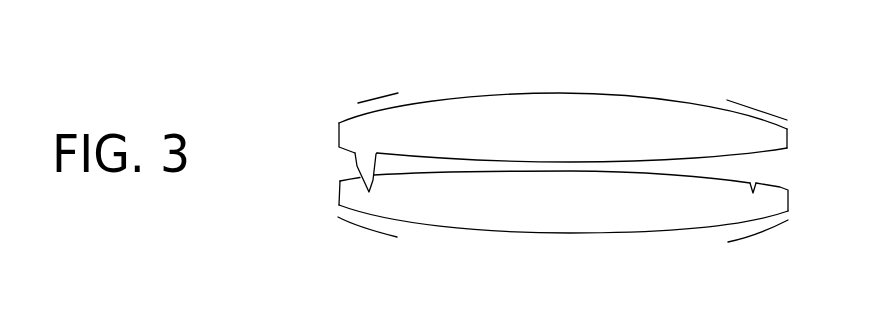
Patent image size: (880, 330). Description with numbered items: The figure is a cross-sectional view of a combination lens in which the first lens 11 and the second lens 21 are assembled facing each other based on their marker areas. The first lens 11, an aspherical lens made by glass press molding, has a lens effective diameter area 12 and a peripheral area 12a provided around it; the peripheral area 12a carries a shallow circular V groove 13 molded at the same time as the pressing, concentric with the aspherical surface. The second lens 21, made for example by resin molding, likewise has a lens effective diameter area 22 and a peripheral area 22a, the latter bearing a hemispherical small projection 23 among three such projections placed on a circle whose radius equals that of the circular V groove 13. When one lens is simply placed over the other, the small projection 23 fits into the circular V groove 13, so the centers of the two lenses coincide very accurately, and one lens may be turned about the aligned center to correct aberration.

The first lens 11 is at (505, 227).
The lens effective diameter area 12 is at (578, 215).
The peripheral area 12a is at (368, 232).
The circular V groove 13 is at (752, 184).
The second lens 21 is at (529, 103).
The lens effective diameter area 22 is at (578, 141).
The peripheral area 22a is at (370, 100).
The small projection 23 is at (366, 163).